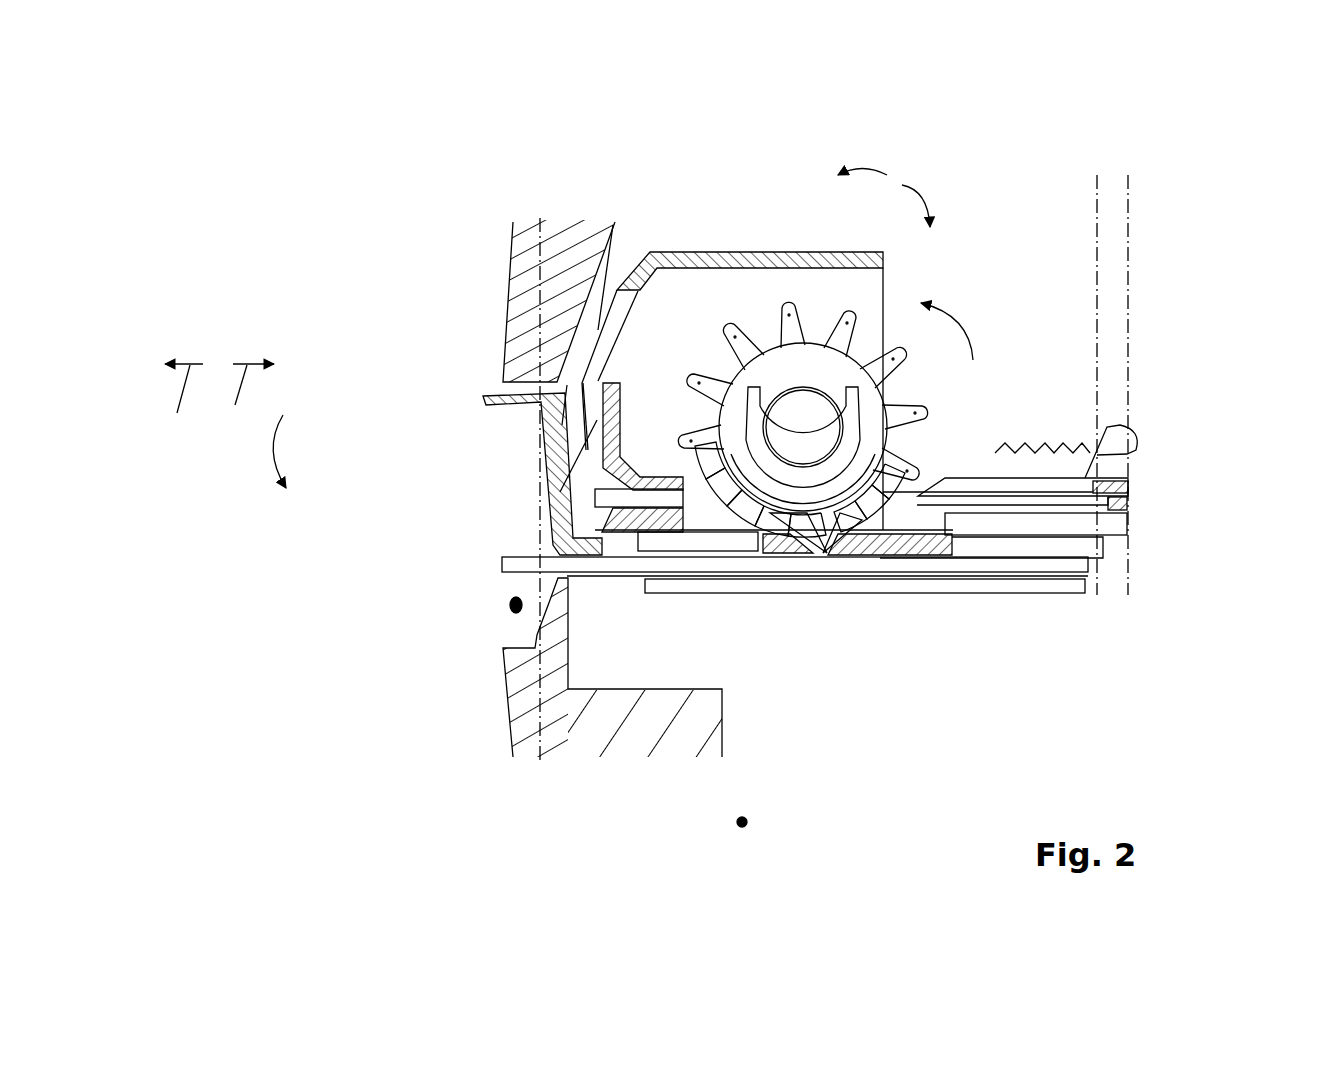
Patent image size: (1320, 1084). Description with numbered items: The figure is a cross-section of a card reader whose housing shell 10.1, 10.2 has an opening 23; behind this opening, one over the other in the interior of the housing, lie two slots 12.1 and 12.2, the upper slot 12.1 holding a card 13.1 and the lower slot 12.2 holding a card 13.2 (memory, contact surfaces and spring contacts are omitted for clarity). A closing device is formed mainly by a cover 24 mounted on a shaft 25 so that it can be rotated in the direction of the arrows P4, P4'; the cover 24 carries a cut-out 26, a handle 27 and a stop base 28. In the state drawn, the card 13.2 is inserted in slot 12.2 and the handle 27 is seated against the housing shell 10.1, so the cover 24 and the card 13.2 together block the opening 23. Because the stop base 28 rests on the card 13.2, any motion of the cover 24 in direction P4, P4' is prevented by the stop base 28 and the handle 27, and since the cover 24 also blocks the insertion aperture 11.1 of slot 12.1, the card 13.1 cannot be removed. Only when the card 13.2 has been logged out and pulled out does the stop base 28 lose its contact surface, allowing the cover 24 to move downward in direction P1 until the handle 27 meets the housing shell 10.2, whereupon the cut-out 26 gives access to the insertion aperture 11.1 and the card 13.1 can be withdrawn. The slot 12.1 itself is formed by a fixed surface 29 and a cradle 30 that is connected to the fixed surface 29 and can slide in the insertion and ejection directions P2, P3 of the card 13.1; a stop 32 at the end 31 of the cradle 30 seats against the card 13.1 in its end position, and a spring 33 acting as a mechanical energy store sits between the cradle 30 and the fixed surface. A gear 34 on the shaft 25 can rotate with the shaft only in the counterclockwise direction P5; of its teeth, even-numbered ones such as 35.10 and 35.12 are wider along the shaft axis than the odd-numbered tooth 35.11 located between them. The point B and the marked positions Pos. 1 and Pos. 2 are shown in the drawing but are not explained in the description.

The housing shell 10.1 is at (510, 270).
The housing shell 10.2 is at (540, 702).
The insertion aperture 11.1 is at (592, 500).
The slot 12.1 is at (602, 478).
The slot 12.2 is at (849, 656).
The card 13.1 is at (613, 415).
The card 13.2 is at (886, 569).
The opening 23 is at (510, 605).
The cover 24 is at (540, 443).
The shaft 25 is at (803, 427).
The cut-out 26 is at (650, 252).
The handle 27 is at (563, 437).
The stop base 28 is at (560, 549).
The fixed surface 29 is at (1030, 548).
The cradle 30 is at (918, 513).
The end 31 is at (1197, 512).
The stop 32 is at (1128, 520).
The spring 33 is at (1043, 440).
The gear 34 is at (768, 427).
The tooth 35.10 is at (703, 380).
The tooth 35.11 is at (737, 347).
The tooth 35.12 is at (787, 328).
The reference point B is at (742, 840).
The arrow P1 is at (257, 459).
The direction of ejection and insertion P2 is at (242, 405).
The direction of ejection and insertion P3 is at (174, 407).
The arrow P4 is at (879, 146).
The arrow P4' is at (953, 193).
The counterclockwise direction P5 is at (967, 330).
The position 1 Pos. 1 is at (1097, 195).
The position 2 Pos. 2 is at (1133, 185).